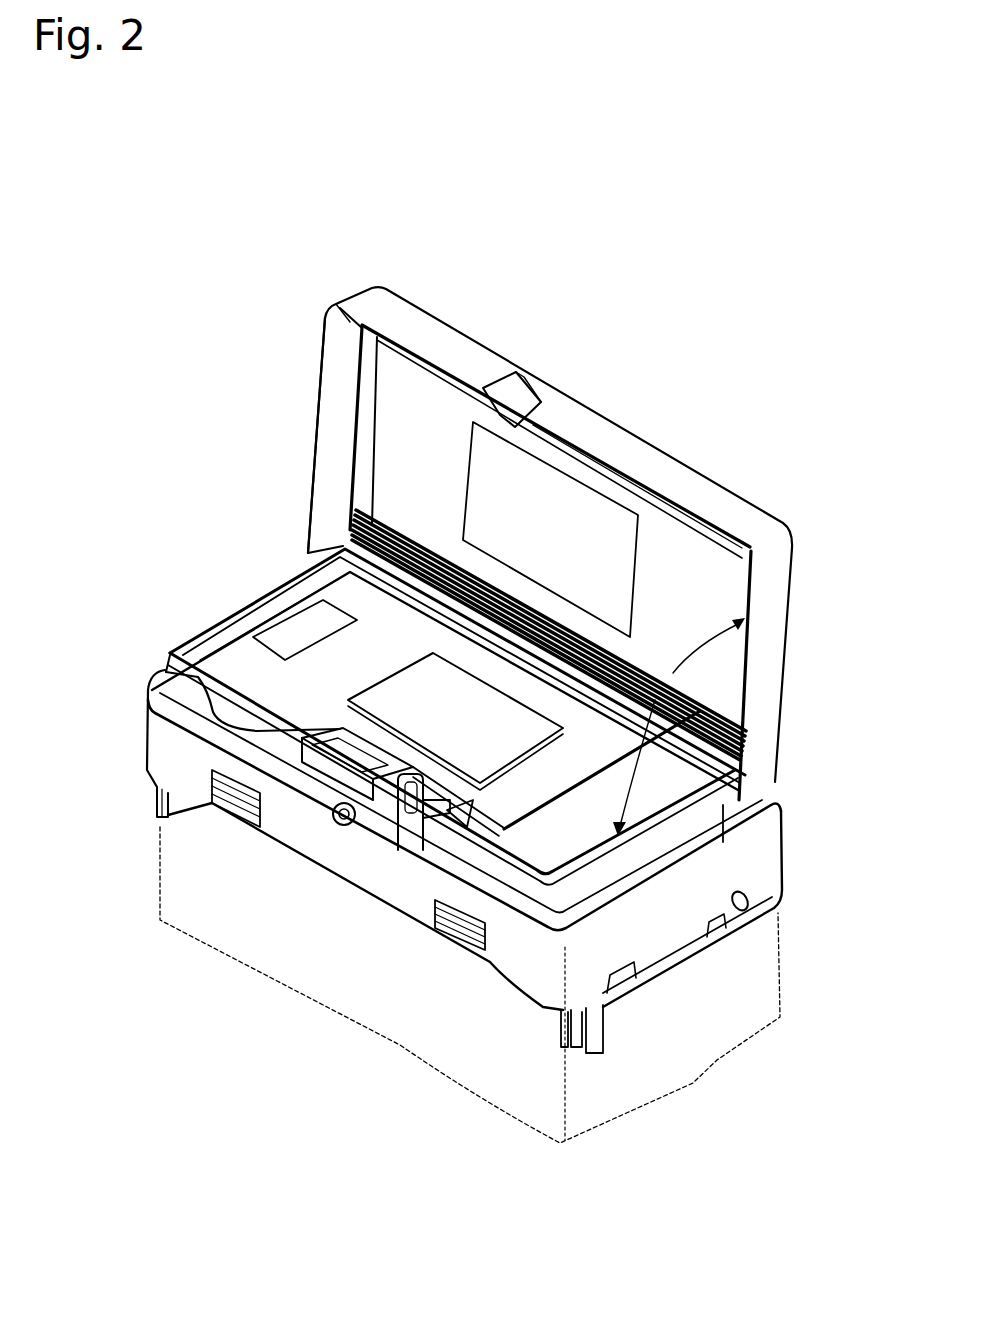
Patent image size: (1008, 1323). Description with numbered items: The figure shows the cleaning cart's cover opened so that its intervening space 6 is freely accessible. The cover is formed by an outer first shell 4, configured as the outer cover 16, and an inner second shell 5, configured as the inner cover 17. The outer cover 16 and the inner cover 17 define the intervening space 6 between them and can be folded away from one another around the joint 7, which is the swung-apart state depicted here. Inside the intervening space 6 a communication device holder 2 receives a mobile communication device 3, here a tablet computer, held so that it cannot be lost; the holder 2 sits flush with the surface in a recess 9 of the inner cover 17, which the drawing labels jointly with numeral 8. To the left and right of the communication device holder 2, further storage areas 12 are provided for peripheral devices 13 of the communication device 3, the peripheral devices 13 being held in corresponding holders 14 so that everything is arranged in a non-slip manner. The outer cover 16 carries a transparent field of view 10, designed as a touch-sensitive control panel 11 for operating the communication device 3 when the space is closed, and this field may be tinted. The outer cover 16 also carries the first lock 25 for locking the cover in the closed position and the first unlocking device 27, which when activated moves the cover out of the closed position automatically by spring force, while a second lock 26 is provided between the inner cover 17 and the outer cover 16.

The communication device holder 2 is at (505, 603).
The mobile communication device 3 is at (270, 590).
The first shell 4 is at (191, 428).
The second shell 5 is at (386, 721).
The intervening space 6 is at (673, 673).
The joint 7 is at (777, 781).
The receiving region 8 is at (298, 737).
The recess 9 is at (323, 687).
The transparent field of view 10 is at (335, 529).
The touch-sensitive control panel 11 is at (487, 500).
The storage areas 12 is at (250, 663).
The peripheral devices 13 is at (270, 650).
The holders 14 is at (428, 697).
The outer cover 16 is at (328, 500).
The inner cover 17 is at (240, 610).
The first lock 25 is at (333, 820).
The second lock 26 is at (462, 808).
The first unlocking device 27 is at (580, 462).